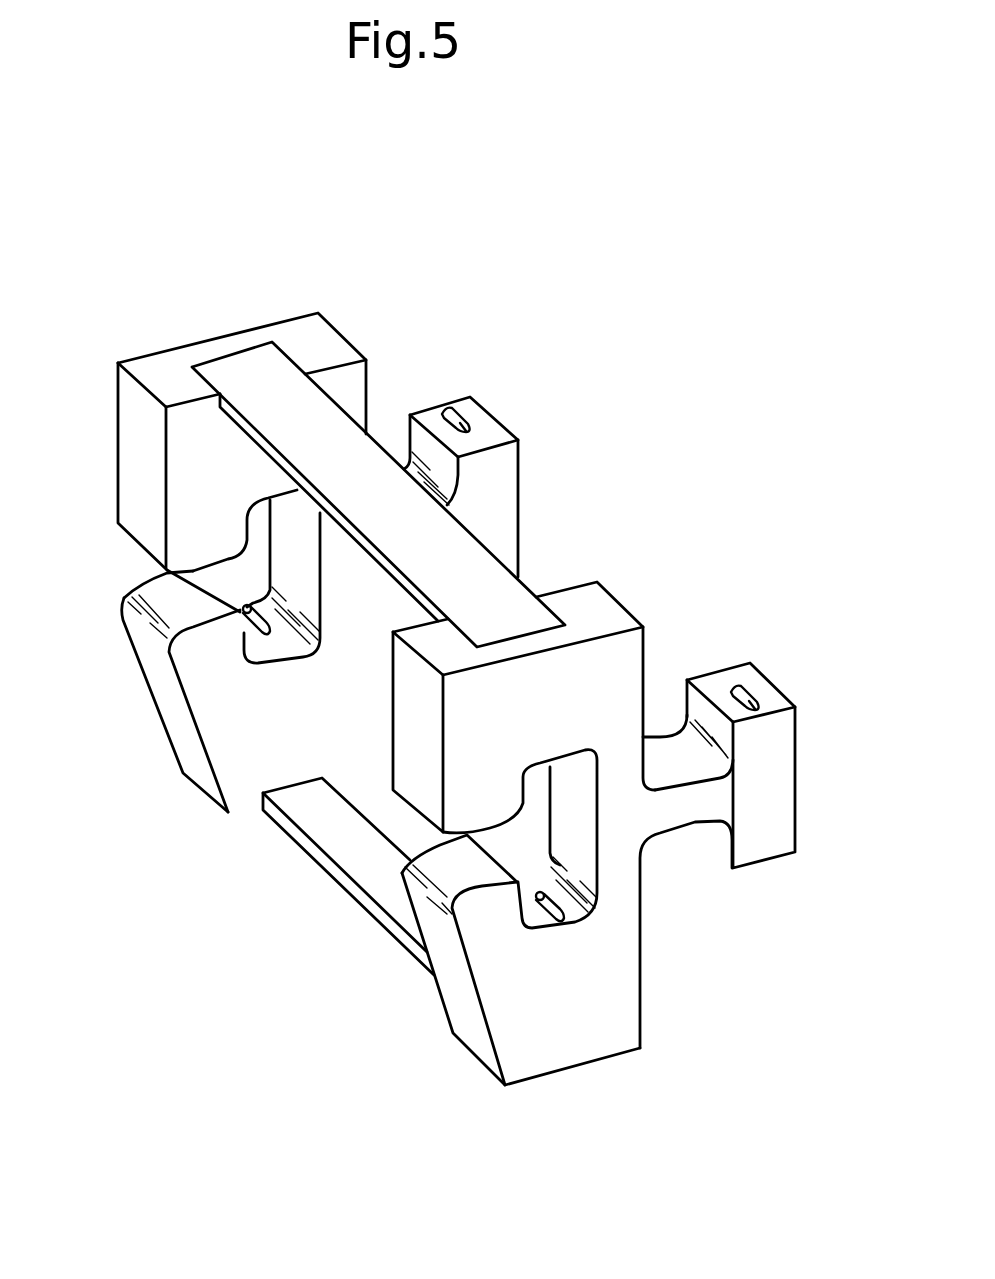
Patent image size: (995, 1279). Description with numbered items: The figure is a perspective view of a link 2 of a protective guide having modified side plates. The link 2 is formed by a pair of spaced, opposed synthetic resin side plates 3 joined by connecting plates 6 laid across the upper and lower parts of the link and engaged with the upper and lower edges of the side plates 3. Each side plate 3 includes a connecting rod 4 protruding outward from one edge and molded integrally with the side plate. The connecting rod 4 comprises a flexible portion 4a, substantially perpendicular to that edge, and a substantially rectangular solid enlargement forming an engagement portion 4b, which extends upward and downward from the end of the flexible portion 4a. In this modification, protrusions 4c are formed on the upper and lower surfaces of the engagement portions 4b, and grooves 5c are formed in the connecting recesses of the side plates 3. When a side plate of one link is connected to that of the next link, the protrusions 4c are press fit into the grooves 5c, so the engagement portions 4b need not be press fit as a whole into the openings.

The link 2 is at (366, 322).
The side plate 3 is at (170, 376).
The connecting rod 4 is at (887, 921).
The flexible portion 4a is at (673, 817).
The engagement portion 4b is at (497, 483).
The protrusion 4c is at (468, 410).
The groove 5c is at (243, 622).
The connecting plate 6 is at (366, 463).